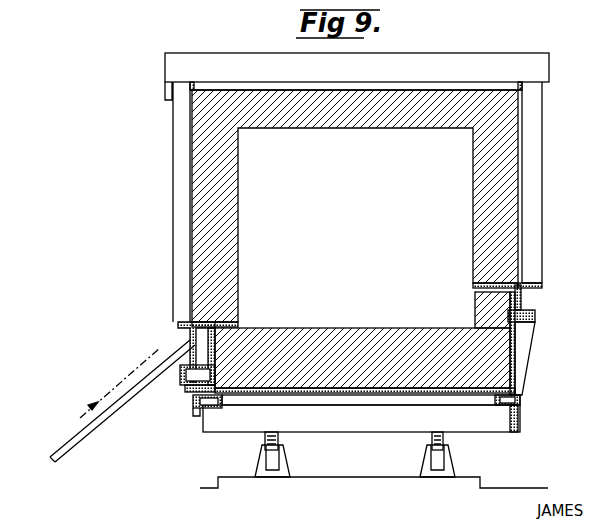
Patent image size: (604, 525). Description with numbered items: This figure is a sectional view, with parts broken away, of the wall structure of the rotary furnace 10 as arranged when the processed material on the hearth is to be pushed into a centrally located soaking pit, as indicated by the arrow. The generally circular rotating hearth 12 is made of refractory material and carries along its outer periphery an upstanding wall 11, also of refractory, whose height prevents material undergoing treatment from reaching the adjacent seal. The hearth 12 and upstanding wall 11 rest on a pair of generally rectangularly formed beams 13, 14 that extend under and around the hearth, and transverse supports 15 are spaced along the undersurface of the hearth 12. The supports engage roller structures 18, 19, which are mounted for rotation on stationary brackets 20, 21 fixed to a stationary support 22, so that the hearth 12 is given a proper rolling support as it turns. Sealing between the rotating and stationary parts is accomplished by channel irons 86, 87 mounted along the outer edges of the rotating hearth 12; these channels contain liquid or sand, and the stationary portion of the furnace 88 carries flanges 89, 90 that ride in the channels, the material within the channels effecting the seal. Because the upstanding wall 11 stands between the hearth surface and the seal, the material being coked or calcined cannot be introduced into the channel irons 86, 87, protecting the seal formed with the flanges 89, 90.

The furnace 10 is at (490, 110).
The upstanding wall 11 is at (478, 300).
The hearth 12 is at (348, 327).
The beam 13 is at (522, 405).
The beam 14 is at (195, 405).
The transverse support 15 is at (372, 410).
The roller structure 18 is at (443, 444).
The roller structure 19 is at (265, 452).
The stationary bracket 20 is at (456, 470).
The stationary bracket 21 is at (283, 470).
The stationary support 22 is at (388, 478).
The channel iron 86 is at (536, 316).
The channel iron 87 is at (180, 374).
The stationary portion of the furnace 88 is at (394, 102).
The flange 89 is at (190, 345).
The flange 90 is at (525, 300).